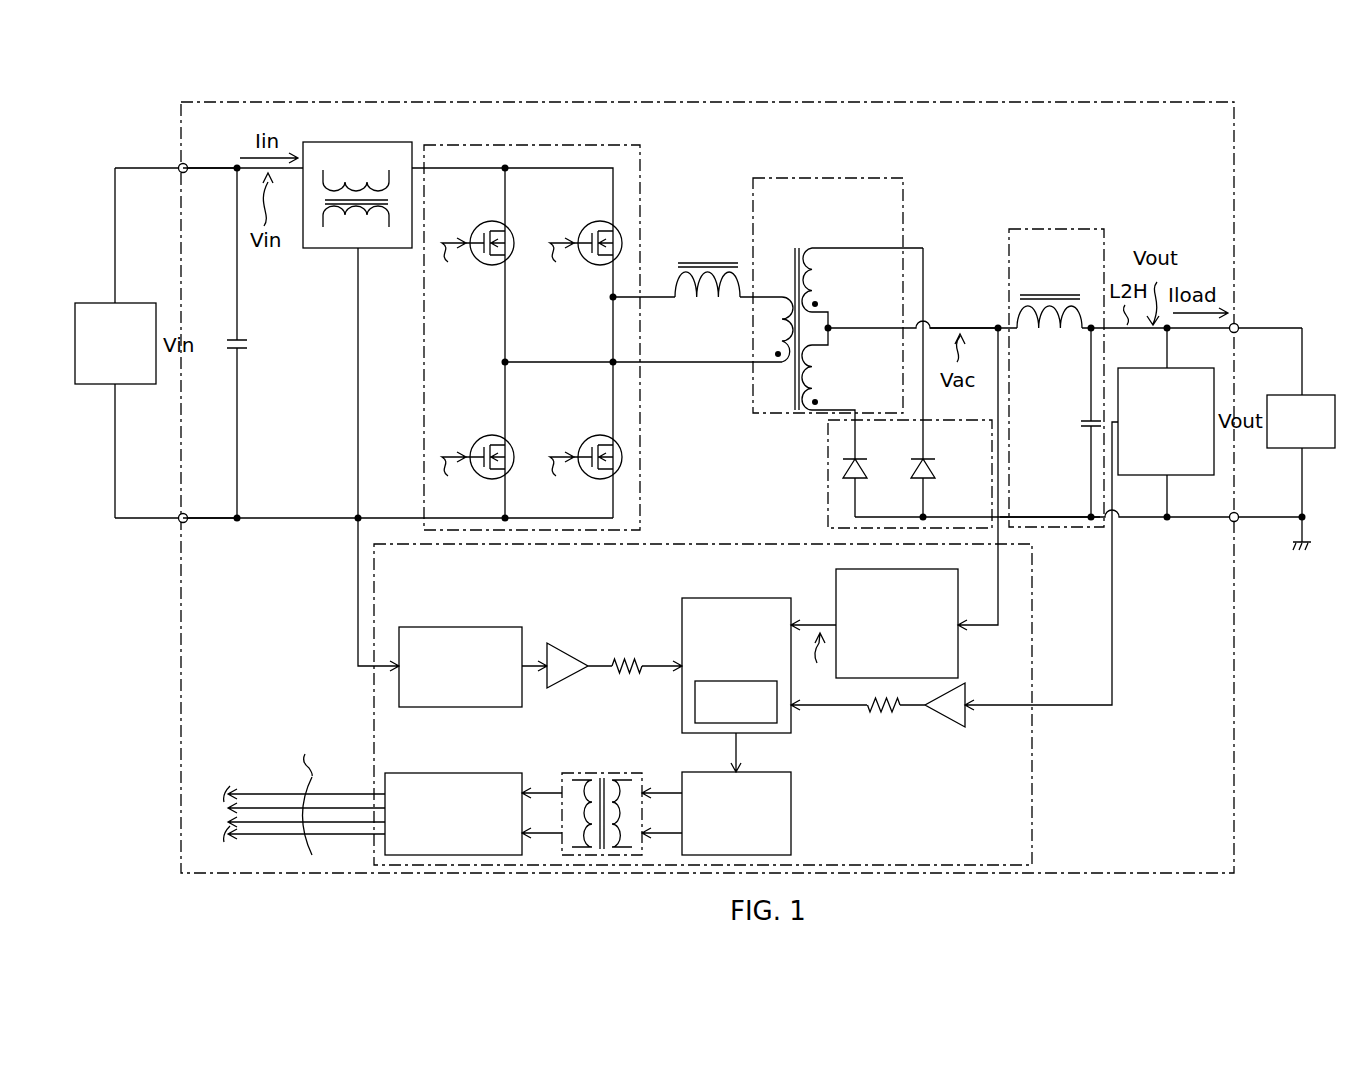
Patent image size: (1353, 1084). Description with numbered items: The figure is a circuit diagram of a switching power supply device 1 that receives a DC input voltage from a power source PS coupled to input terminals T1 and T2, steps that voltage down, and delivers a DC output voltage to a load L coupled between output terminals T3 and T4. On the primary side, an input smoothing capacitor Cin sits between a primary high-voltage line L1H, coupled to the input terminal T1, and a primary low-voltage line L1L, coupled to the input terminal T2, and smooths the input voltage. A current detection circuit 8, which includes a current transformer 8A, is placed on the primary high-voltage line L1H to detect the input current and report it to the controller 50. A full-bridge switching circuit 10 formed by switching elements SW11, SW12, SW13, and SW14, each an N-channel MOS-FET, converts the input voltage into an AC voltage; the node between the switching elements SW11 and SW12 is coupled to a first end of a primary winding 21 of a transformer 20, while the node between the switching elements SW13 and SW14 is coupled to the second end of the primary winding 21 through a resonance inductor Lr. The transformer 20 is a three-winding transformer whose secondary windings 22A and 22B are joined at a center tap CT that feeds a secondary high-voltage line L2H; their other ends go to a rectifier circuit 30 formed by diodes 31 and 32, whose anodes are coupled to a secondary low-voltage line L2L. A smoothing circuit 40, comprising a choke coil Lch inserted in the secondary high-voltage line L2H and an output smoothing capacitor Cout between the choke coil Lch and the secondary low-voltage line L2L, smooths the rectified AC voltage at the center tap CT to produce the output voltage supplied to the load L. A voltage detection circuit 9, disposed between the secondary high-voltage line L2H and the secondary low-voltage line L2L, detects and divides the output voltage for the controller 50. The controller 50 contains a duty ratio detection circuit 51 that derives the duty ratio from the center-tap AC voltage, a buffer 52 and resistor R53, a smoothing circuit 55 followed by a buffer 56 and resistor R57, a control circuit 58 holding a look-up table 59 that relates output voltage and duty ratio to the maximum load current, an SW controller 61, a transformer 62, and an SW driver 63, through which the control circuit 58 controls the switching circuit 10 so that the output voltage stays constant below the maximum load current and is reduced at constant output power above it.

The switching power supply device 1 is at (665, 103).
The current detection circuit 8 is at (361, 392).
The current transformer 8A is at (402, 220).
The voltage detection circuit 9 is at (1182, 365).
The switching circuit 10 is at (540, 146).
The transformer 20 is at (838, 306).
The primary winding 21 is at (785, 290).
The secondary winding 22A is at (826, 285).
The secondary winding 22B is at (826, 390).
The rectifier circuit 30 is at (867, 474).
The diode 31 is at (867, 463).
The diode 32 is at (932, 463).
The smoothing circuit 40 is at (1052, 344).
The controller 50 is at (1032, 790).
The duty ratio detection circuit 51 is at (900, 569).
The buffer 52 is at (944, 728).
The resistor R53 is at (890, 728).
The smoothing circuit 55 is at (481, 627).
The buffer 56 is at (571, 649).
The resistor R57 is at (636, 641).
The control circuit 58 is at (711, 650).
The LUT 59 is at (695, 704).
The SW controller 61 is at (768, 776).
The transformer 62 is at (604, 773).
The SW driver 63 is at (463, 776).
The input terminal T1 is at (188, 189).
The input terminal T2 is at (178, 525).
The output terminal T3 is at (1239, 347).
The output terminal T4 is at (1236, 528).
The primary high-voltage line L1H is at (205, 163).
The primary low-voltage line L1L is at (208, 526).
The secondary high-voltage line L2H is at (959, 325).
The secondary low-voltage line L2L is at (1060, 513).
The power source PS is at (124, 303).
The input smoothing capacitor Cin is at (223, 340).
The output smoothing capacitor Cout is at (1088, 414).
The resonance inductor Lr is at (707, 261).
The choke coil Lch is at (1050, 294).
The center tap CT is at (828, 330).
The switching element SW11 is at (496, 213).
The switching element SW12 is at (496, 427).
The switching element SW13 is at (604, 213).
The switching element SW14 is at (604, 427).
The load L is at (1290, 392).